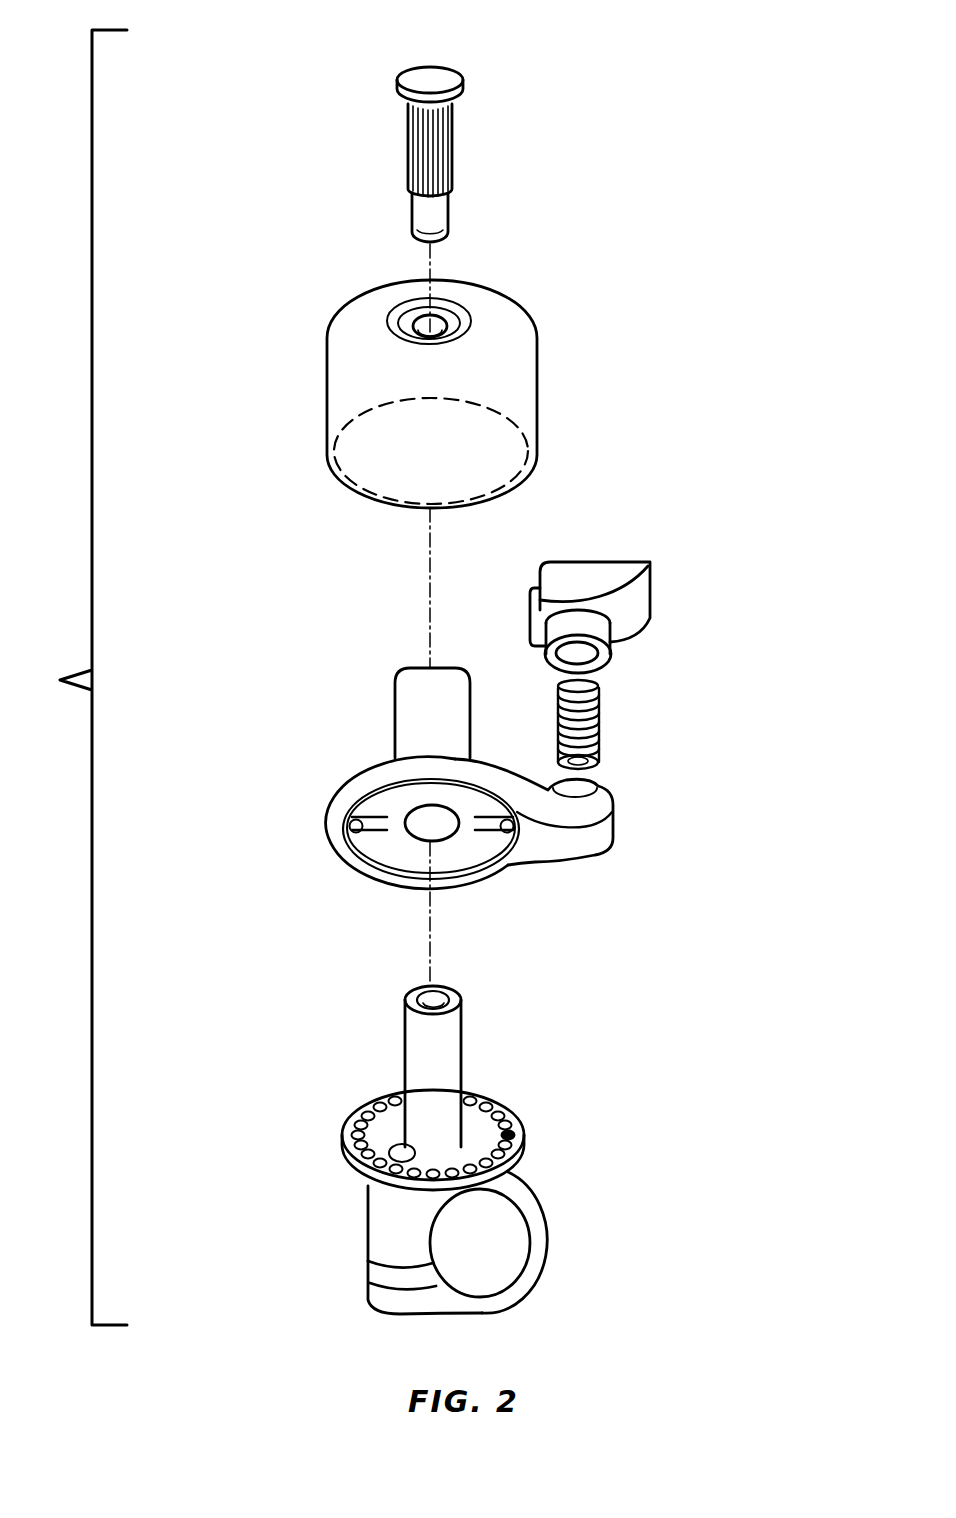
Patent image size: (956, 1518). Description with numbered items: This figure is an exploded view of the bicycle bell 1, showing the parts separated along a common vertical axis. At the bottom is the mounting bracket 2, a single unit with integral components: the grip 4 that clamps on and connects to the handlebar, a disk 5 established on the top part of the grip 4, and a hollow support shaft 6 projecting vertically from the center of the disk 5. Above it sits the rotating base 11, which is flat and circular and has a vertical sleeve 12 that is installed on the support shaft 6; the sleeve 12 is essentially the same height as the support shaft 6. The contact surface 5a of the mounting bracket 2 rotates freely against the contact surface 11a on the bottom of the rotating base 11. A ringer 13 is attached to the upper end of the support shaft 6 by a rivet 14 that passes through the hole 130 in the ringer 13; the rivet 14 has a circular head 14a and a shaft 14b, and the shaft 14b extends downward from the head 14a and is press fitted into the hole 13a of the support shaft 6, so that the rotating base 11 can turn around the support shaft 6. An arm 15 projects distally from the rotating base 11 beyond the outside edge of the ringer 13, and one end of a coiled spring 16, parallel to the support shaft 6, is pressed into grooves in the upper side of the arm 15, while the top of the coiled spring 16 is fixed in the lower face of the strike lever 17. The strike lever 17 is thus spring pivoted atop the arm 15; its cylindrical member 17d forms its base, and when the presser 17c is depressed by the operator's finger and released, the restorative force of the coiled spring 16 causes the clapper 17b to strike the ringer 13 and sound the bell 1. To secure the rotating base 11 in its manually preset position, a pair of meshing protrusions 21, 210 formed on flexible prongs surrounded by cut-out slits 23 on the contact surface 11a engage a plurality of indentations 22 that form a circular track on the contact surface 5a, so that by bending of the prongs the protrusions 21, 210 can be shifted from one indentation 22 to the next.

The bell 1 is at (81, 677).
The mounting bracket 2 is at (447, 1243).
The grip 4 is at (549, 1192).
The disk 5 is at (434, 1135).
The contact surface 5a is at (385, 1125).
The hollow support shaft 6 is at (476, 1056).
The rotating base 11 is at (471, 851).
The contact surface 11a is at (415, 843).
The vertical sleeve 12 is at (413, 707).
The ringer 13 is at (468, 381).
The hole 13a is at (455, 992).
The hole 130 is at (438, 322).
The rivet 14 is at (430, 144).
The circular head 14a is at (427, 80).
The shaft 14b is at (455, 170).
The arm 15 is at (588, 792).
The coiled spring 16 is at (600, 728).
The strike lever 17 is at (588, 585).
The clapper 17b is at (530, 590).
The presser 17c is at (652, 566).
The cylindrical member 17d is at (540, 650).
The meshing protrusion 21 is at (342, 822).
The indentations 22 is at (514, 1134).
The cut-out slits 23 is at (377, 810).
The meshing protrusion 210 is at (520, 860).